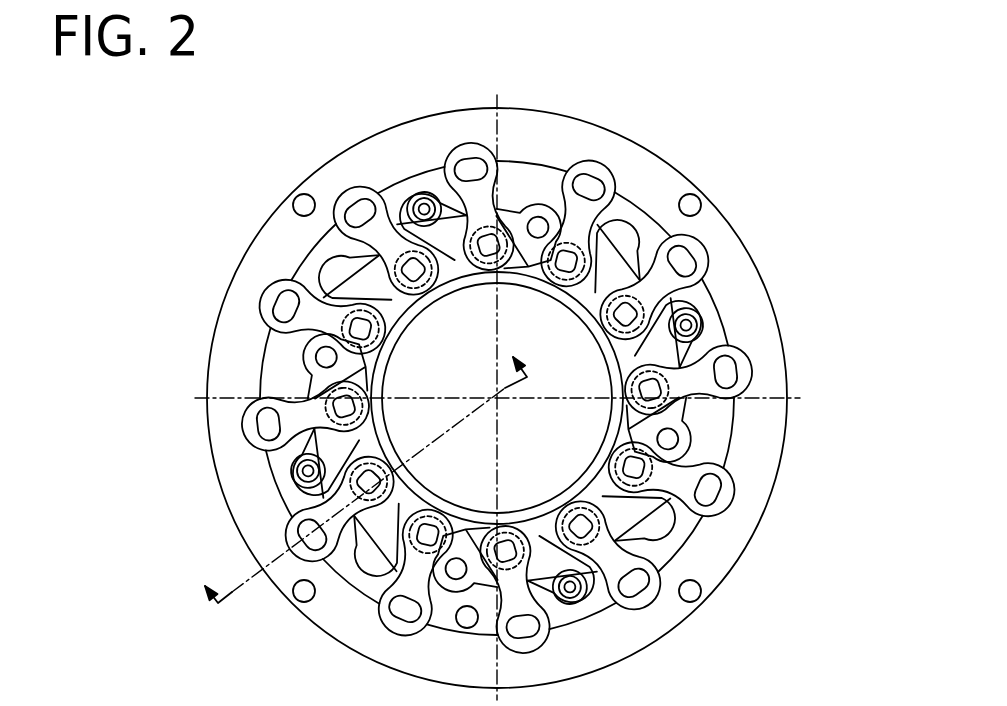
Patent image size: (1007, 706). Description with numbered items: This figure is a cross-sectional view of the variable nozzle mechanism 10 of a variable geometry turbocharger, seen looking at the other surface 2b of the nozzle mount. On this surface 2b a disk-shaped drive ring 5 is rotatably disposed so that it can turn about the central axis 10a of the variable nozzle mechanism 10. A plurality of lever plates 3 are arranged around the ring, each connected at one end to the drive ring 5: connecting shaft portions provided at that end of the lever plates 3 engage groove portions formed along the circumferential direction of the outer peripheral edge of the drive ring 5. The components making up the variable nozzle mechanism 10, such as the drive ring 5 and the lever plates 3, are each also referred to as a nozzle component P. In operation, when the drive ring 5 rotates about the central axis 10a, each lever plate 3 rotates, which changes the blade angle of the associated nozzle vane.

The variable nozzle mechanism 10 is at (283, 152).
The central axis 10a is at (496, 398).
The other surface of the nozzle mount 2b is at (722, 540).
The drive ring 5 is at (640, 212).
The lever plate 3 is at (480, 192).